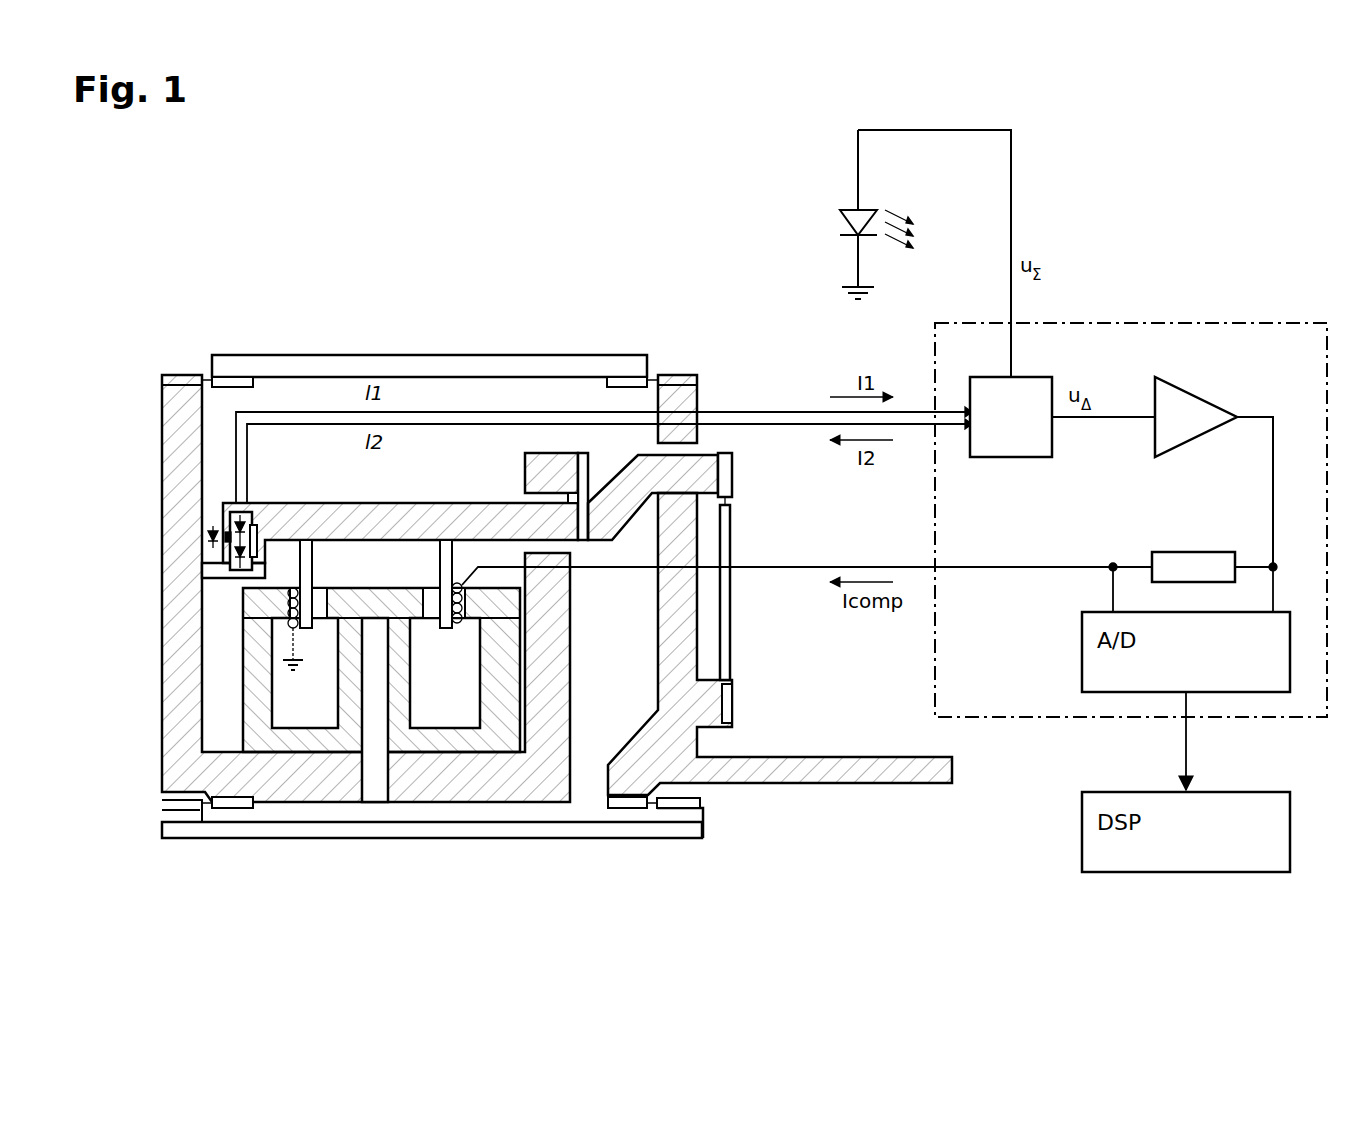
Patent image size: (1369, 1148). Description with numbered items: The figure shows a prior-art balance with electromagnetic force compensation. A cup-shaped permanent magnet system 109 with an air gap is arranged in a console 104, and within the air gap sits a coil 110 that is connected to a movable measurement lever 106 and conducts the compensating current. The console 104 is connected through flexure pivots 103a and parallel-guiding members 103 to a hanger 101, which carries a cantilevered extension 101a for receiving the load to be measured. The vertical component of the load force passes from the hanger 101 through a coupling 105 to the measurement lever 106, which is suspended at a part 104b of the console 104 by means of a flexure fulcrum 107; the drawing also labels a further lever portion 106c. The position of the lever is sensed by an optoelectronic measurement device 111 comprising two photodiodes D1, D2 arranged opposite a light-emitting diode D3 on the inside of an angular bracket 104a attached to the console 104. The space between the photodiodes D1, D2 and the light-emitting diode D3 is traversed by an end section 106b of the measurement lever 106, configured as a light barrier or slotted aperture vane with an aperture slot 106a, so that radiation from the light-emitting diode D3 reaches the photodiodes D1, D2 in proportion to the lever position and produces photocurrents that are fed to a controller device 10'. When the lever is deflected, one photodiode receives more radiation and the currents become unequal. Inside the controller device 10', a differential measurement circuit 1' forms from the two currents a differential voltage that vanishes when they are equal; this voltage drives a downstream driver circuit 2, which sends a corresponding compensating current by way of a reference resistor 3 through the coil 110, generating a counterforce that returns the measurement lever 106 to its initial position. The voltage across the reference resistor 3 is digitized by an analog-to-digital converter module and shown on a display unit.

The hanger 101 is at (700, 410).
The cantilevered extension 101a is at (806, 757).
The parallel-guiding members 103 is at (470, 365).
The flexure pivots 103a is at (210, 374).
The console 104 is at (180, 425).
The angular bracket 104a is at (215, 587).
The part of the console 104b is at (555, 635).
The coupling 105 is at (728, 533).
The measurement lever 106 is at (400, 528).
The aperture slot 106a is at (223, 536).
The end section of the measurement lever 106b is at (213, 560).
The pendulum arm 106c is at (706, 460).
The flexure fulcrum 107 is at (590, 500).
The permanent magnet system 109 is at (440, 745).
The coil 110 is at (425, 630).
The optoelectronic measurement device 111 is at (158, 550).
The first photodiode D1 is at (248, 527).
The second photodiode D2 is at (248, 547).
The light-emitting diode D3 is at (205, 537).
The differential measurement circuit 1' is at (955, 293).
The driver circuit 2 is at (1214, 472).
The reference resistor 3 is at (1192, 552).
The controller device 10' is at (1290, 360).